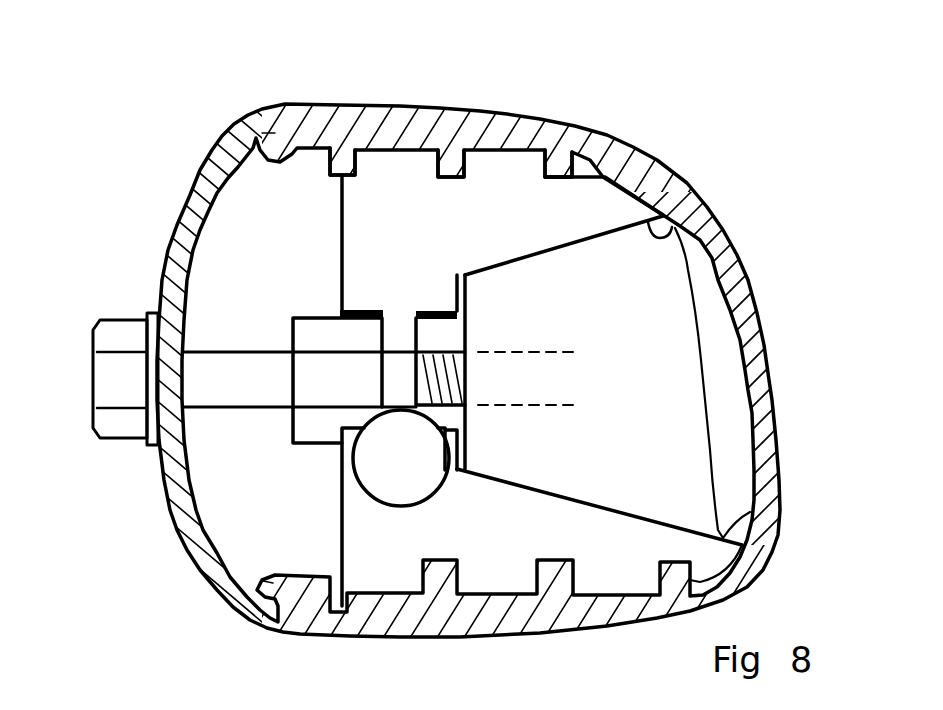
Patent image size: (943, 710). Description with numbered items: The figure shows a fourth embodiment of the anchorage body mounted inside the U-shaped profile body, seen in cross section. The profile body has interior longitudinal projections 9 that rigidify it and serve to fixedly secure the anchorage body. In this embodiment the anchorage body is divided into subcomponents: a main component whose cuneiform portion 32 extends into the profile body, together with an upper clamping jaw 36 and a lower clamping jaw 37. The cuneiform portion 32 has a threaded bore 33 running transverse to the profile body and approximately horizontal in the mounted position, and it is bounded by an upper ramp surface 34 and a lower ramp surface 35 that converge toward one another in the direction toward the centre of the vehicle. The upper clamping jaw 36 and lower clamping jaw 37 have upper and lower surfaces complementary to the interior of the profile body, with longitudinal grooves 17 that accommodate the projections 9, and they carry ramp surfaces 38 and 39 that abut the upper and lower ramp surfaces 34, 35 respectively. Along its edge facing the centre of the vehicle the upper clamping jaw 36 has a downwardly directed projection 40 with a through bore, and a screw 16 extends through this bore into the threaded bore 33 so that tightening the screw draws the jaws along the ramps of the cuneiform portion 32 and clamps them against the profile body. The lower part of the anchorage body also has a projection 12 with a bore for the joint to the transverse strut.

The longitudinal projections 9 is at (344, 160).
The projection 12 is at (311, 331).
The screw 16 is at (118, 332).
The longitudinal grooves 17 is at (490, 152).
The cuneiform portion 32 is at (666, 344).
The threaded bore 33 is at (517, 407).
The upper ramp surface 34 is at (555, 268).
The lower ramp surface 35 is at (612, 503).
The upper clamping jaw 36 is at (353, 188).
The lower clamping jaw 37 is at (353, 531).
The ramp surface 38 is at (675, 230).
The ramp surface 39 is at (746, 512).
The downwardly directed projection 40 is at (393, 368).